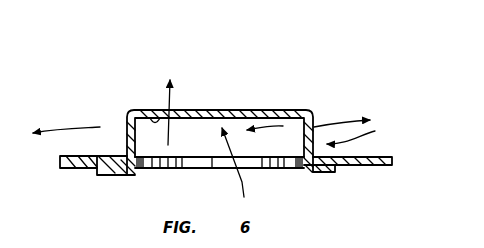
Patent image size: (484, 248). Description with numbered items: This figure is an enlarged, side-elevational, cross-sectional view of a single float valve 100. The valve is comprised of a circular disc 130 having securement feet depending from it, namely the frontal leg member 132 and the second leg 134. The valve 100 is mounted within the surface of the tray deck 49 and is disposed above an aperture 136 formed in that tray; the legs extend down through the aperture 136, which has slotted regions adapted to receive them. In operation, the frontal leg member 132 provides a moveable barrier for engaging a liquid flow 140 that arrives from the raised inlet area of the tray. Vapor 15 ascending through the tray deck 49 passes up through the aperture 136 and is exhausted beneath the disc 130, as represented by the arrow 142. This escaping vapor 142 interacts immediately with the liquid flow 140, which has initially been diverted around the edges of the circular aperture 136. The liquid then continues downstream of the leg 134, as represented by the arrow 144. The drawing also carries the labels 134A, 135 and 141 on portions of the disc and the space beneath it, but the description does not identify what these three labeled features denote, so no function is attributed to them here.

The float valve 100 is at (114, 103).
The frontal leg member 132 is at (313, 120).
The securement foot 134 is at (98, 163).
The inner surface of housing 134A is at (177, 110).
The top wall of housing 135 is at (156, 118).
The aperture 136 is at (171, 168).
The cavity 141 is at (252, 119).
The circular disc 130 is at (266, 123).
The vapor 15 is at (243, 183).
The liquid flow 140 is at (367, 133).
The arrow representing escaping vapor 142 is at (343, 122).
The arrow representing downstream liquid flow 144 is at (66, 118).
The tray deck 49 is at (365, 170).